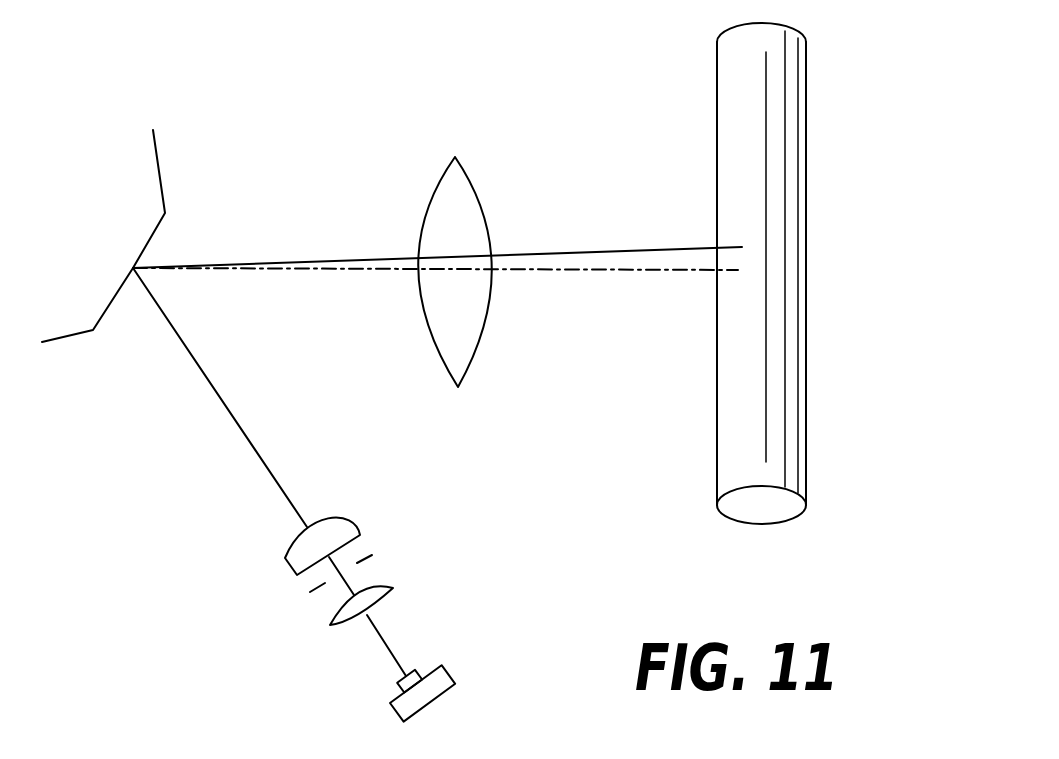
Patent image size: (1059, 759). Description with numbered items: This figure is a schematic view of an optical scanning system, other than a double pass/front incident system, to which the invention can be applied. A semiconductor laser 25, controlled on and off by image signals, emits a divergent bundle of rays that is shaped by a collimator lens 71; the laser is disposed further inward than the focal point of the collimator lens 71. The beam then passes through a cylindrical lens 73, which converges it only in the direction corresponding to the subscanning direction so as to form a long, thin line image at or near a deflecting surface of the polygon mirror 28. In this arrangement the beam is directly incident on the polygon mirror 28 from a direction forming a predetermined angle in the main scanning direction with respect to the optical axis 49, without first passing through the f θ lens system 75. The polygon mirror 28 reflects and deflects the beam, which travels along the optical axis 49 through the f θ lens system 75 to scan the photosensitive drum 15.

The polygon mirror 28 is at (145, 183).
The f θ lens system 75 is at (443, 205).
The optical axis 49 is at (648, 270).
The photosensitive drum 15 is at (750, 385).
The cylindrical lens 73 is at (340, 532).
The collimator lens 71 is at (380, 598).
The semiconductor laser 25 is at (444, 682).